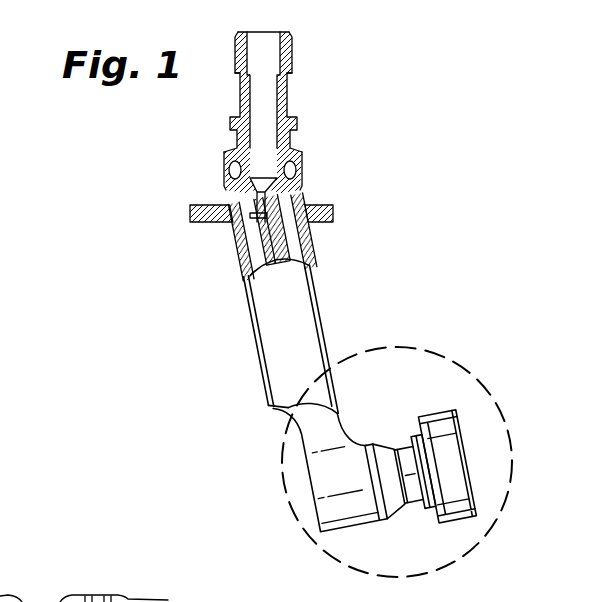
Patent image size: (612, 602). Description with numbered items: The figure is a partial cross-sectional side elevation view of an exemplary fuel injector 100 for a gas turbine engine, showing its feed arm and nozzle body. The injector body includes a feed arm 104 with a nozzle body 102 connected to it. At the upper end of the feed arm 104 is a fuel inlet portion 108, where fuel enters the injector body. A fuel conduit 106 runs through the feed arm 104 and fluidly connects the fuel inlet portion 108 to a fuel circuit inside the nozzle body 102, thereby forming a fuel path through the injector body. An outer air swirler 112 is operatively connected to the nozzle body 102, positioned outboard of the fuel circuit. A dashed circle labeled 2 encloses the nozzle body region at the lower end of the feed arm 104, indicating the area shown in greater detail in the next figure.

The fuel injector 100 is at (395, 157).
The nozzle body 102 is at (383, 520).
The feed arm 104 is at (325, 327).
The fuel conduit 106 is at (301, 256).
The fuel inlet portion 108 is at (287, 88).
The outer air swirler 112 is at (465, 457).
The detail region of FIG. 2 is at (466, 359).